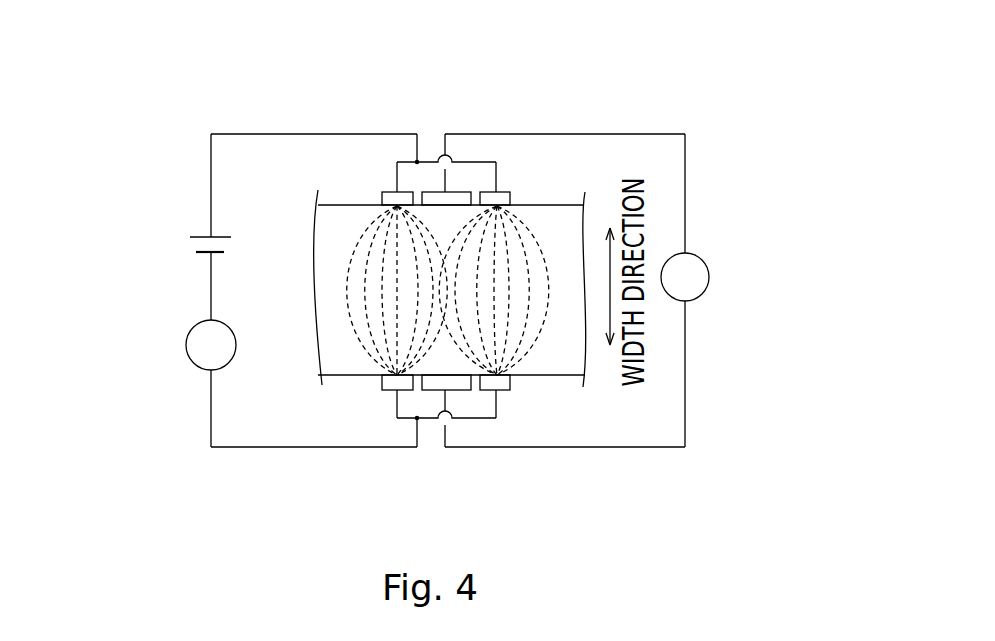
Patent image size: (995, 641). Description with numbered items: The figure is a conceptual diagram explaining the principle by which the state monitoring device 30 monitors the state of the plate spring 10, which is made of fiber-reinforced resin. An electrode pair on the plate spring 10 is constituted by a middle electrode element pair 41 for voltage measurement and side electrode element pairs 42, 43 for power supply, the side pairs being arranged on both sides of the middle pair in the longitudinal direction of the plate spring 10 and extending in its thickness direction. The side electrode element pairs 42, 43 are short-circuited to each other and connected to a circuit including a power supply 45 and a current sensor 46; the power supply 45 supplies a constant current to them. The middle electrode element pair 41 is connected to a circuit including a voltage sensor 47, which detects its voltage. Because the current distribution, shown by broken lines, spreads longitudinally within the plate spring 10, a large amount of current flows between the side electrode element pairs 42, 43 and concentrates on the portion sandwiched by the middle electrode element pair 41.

The plate spring 10 is at (546, 202).
The state monitoring device 30 is at (661, 96).
The middle electrode element pair 41 is at (432, 192).
The side electrode element pair 42 is at (386, 191).
The side electrode element pair 43 is at (508, 191).
The power supply 45 is at (186, 240).
The current sensor 46 is at (187, 336).
The voltage sensor 47 is at (710, 277).